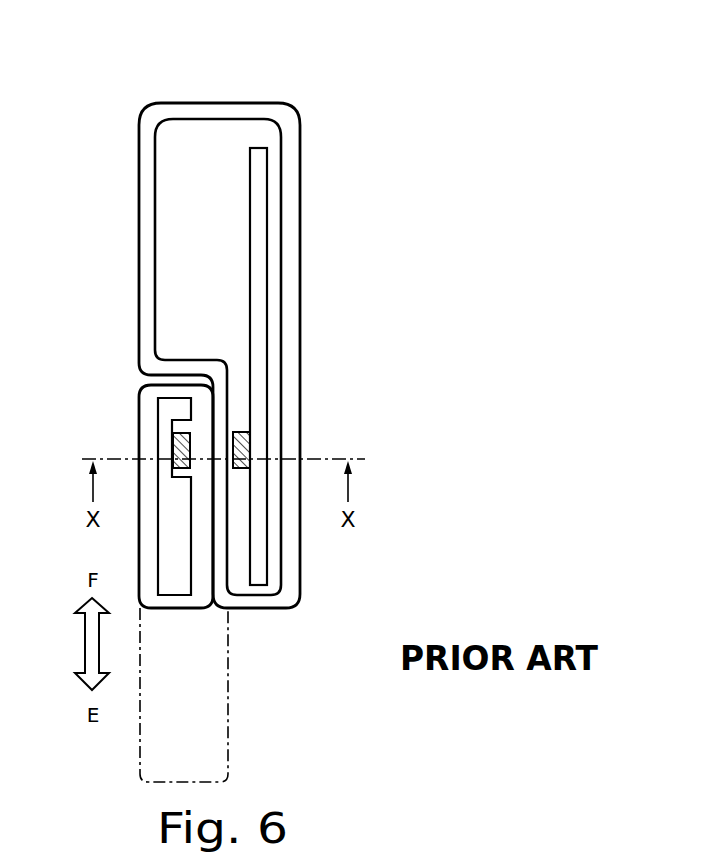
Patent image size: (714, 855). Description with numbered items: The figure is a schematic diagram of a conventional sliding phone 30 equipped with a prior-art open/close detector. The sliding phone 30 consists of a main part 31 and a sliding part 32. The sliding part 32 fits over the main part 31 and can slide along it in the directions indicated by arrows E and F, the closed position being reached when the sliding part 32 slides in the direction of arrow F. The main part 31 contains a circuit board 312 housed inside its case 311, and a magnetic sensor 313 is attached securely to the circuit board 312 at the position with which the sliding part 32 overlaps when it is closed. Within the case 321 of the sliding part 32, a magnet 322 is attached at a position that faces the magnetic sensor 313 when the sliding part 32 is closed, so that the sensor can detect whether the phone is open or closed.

The sliding phone 30 is at (230, 307).
The main part 31 is at (209, 355).
The case 311 is at (139, 230).
The circuit board 312 is at (250, 205).
The magnetic sensor 313 is at (236, 432).
The sliding part 32 is at (127, 477).
The case 321 is at (139, 417).
The magnet 322 is at (173, 446).